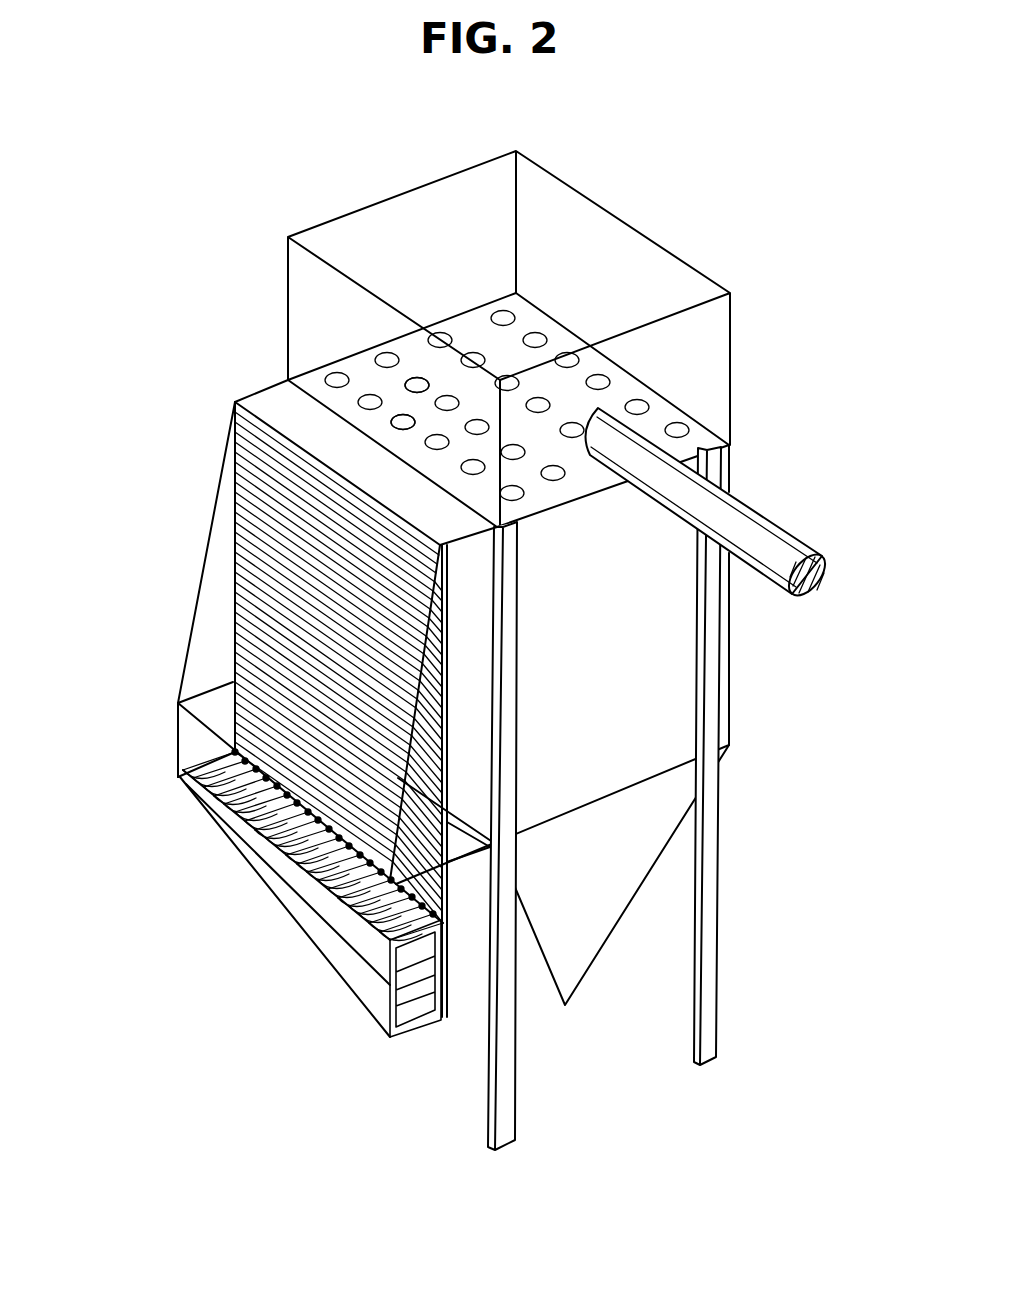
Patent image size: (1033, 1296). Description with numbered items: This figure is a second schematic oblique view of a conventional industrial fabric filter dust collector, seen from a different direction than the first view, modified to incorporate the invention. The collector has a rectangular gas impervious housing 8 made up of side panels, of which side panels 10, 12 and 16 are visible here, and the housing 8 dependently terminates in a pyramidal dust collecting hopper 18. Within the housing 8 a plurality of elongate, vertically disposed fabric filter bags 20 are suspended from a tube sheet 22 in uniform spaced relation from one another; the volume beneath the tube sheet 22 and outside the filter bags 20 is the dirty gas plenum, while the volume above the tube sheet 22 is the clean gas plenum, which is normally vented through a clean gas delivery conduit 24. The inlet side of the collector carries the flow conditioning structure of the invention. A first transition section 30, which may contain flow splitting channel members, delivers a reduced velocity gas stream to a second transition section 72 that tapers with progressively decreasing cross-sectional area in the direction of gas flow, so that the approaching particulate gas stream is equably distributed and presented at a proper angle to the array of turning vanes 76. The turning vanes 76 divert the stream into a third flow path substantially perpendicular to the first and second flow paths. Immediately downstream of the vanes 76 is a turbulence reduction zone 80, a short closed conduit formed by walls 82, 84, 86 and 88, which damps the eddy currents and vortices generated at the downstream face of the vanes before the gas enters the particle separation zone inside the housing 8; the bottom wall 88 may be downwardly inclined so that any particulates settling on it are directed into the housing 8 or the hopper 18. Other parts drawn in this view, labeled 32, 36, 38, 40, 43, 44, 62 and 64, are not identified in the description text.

The gas impervious housing 8 is at (750, 684).
The side panel 10 is at (577, 333).
The side panel 12 is at (623, 566).
The side panel 16 is at (485, 302).
The pyramidal dust collecting hopper 18 is at (598, 963).
The fabric filter bags 20 is at (375, 356).
The tube sheet 22 is at (413, 348).
The clean gas delivery conduit 24 is at (790, 530).
The first transition section 30 is at (338, 1024).
The conveyor end housing 32 is at (418, 1020).
The conveyor flights 36 is at (245, 853).
The outer rail 38 is at (278, 897).
The inner rail 40 is at (337, 955).
The chain 43 is at (309, 815).
The conveyor end wall 44 is at (186, 815).
The side plate 62 is at (206, 698).
The frame member 64 is at (182, 726).
The second transition section 72 is at (185, 578).
The turning vanes 76 is at (326, 566).
The turbulence reduction zone 80 is at (274, 395).
The wall 82 is at (230, 438).
The wall 84 is at (383, 476).
The wall 86 is at (478, 650).
The bottom wall 88 is at (497, 790).